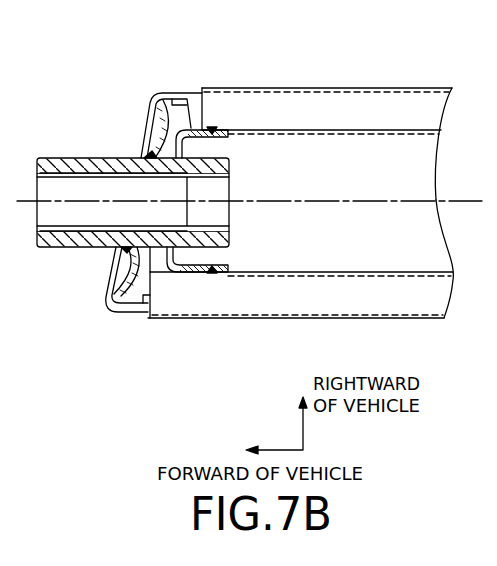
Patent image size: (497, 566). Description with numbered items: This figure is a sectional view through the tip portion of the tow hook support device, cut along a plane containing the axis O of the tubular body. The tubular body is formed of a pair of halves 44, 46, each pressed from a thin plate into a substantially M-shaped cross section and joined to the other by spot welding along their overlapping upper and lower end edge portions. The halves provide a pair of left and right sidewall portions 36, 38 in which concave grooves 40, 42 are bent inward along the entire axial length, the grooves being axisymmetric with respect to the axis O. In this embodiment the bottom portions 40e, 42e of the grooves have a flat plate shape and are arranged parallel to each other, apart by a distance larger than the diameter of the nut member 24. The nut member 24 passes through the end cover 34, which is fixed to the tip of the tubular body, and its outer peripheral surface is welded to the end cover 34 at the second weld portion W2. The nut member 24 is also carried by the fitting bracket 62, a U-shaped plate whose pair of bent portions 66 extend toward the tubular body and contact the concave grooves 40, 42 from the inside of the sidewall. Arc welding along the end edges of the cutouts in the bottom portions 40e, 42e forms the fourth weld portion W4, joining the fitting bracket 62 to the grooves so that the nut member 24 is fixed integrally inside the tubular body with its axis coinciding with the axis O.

The axis O is at (241, 201).
The nut member 24 is at (77, 163).
The end cover 34 is at (124, 96).
The sidewall portion 36 is at (295, 315).
The sidewall portion 38 is at (338, 88).
The concave groove 40 is at (350, 300).
The bottom portion 40e is at (418, 271).
The concave groove 42 is at (288, 108).
The bottom portion 42e is at (414, 131).
The half 44 is at (393, 332).
The half 46 is at (368, 77).
The fitting bracket 62 is at (161, 268).
The bent portion 66 is at (191, 128).
The second weld portion W2 is at (144, 155).
The fourth weld portion W4 is at (213, 128).